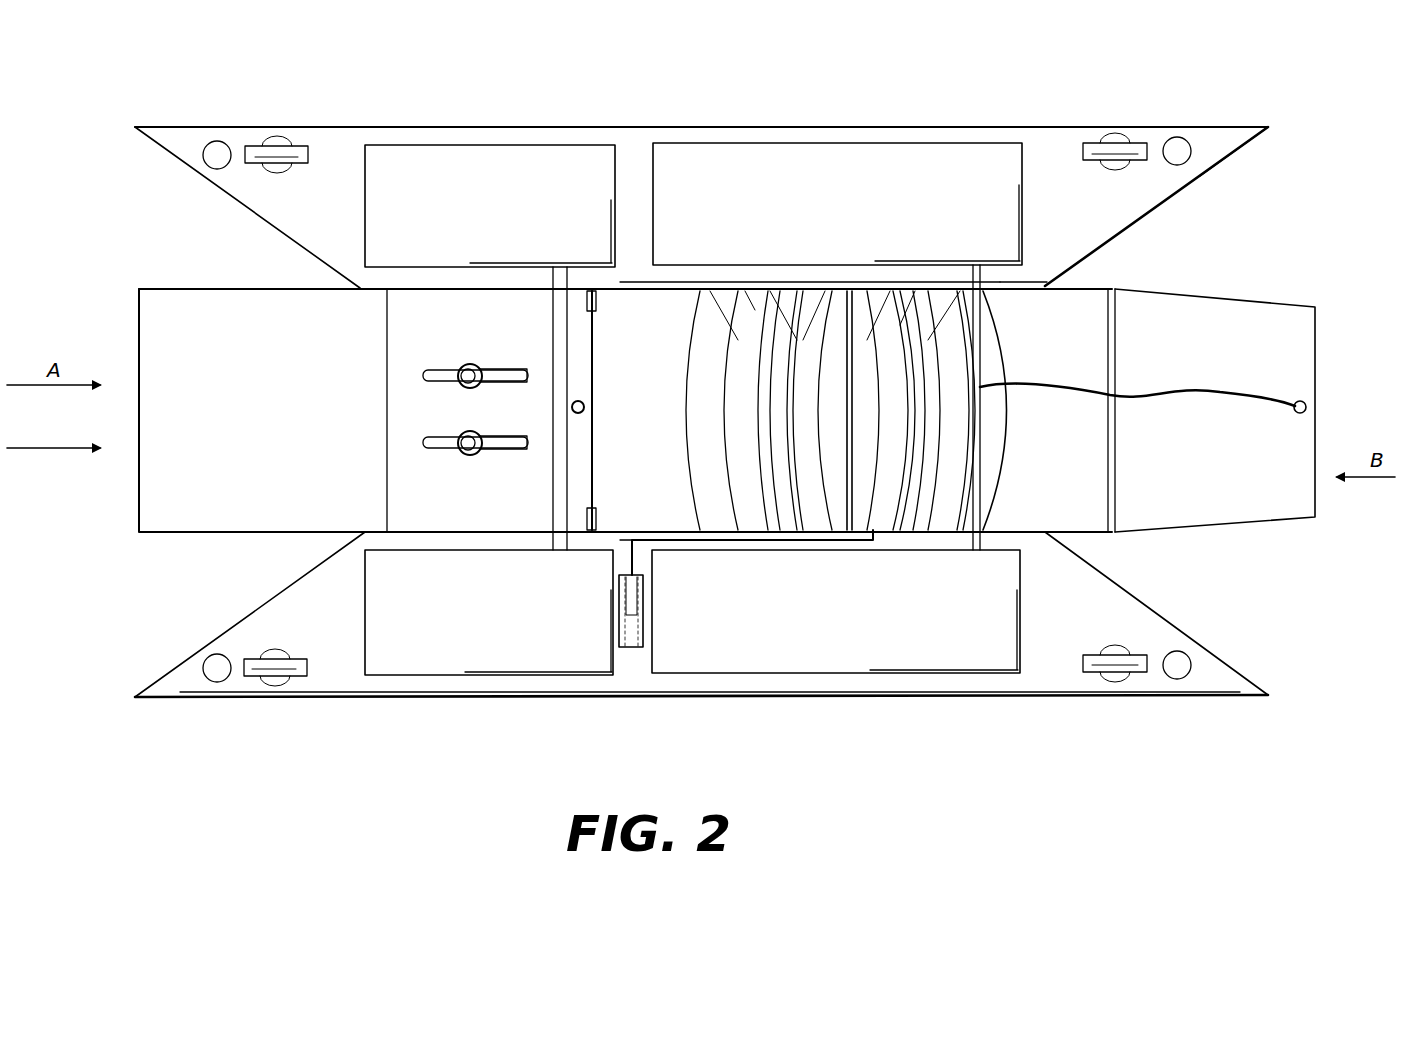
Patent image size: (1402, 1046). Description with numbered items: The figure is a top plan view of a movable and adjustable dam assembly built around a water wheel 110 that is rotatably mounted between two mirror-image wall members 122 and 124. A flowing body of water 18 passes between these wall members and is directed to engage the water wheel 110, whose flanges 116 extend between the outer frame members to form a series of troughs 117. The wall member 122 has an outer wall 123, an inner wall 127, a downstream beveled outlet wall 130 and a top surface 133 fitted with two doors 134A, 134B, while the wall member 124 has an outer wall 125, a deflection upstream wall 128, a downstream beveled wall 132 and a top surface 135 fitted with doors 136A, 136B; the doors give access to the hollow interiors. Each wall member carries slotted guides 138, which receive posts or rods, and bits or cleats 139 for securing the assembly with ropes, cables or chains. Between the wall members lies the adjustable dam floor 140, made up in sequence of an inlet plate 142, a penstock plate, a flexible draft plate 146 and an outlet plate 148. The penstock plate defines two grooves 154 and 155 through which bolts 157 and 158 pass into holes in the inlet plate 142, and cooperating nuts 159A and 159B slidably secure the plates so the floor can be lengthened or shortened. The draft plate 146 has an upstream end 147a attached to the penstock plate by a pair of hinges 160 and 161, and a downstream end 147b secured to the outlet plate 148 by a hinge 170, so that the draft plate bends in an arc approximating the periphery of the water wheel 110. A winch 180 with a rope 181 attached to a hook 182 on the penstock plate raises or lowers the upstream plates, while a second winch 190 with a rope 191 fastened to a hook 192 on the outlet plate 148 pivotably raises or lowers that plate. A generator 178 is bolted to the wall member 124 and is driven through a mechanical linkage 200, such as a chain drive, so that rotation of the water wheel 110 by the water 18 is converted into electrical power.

The flowing body of water 18 is at (65, 447).
The water wheel 110 is at (688, 325).
The flanges 116 is at (712, 340).
The troughs 117 is at (826, 482).
The wall member 122 is at (1003, 115).
The outer wall 123 is at (826, 126).
The wall member 124 is at (1077, 715).
The outer wall 125 is at (365, 378).
The inner wall 127 is at (410, 292).
The deflection upstream wall 128 is at (216, 633).
The downstream beveled outlet wall 130 is at (1178, 196).
The downstream beveled wall 132 is at (1152, 606).
The top surface 133 is at (1081, 226).
The door 134A is at (460, 148).
The door 134B is at (698, 152).
The top surface 135 is at (324, 620).
The door 136A is at (405, 665).
The door 136B is at (705, 657).
The slotted guides 138 is at (1172, 140).
The bits or cleats 139 is at (1100, 143).
The adjustable dam floor 140 is at (203, 537).
The inlet plate 142 is at (278, 426).
The flexible draft plate 146 is at (1088, 291).
The upstream end 147a is at (662, 418).
The downstream end 147b is at (1075, 418).
The outlet plate 148 is at (1222, 438).
The groove 154 is at (443, 370).
The groove 155 is at (445, 440).
The bolt 157 is at (463, 366).
The bolt 158 is at (462, 455).
The nut 159A is at (497, 376).
The nut 159B is at (480, 450).
The hinge 160 is at (553, 300).
The hinge 161 is at (588, 528).
The hinge 170 is at (1112, 532).
The generator 178 is at (630, 640).
The winch 180 is at (553, 388).
The rope 181 is at (578, 400).
The hook 182 is at (578, 414).
The winch 190 is at (975, 338).
The rope 191 is at (1133, 397).
The hook 192 is at (1308, 409).
The mechanical linkage 200 is at (678, 540).